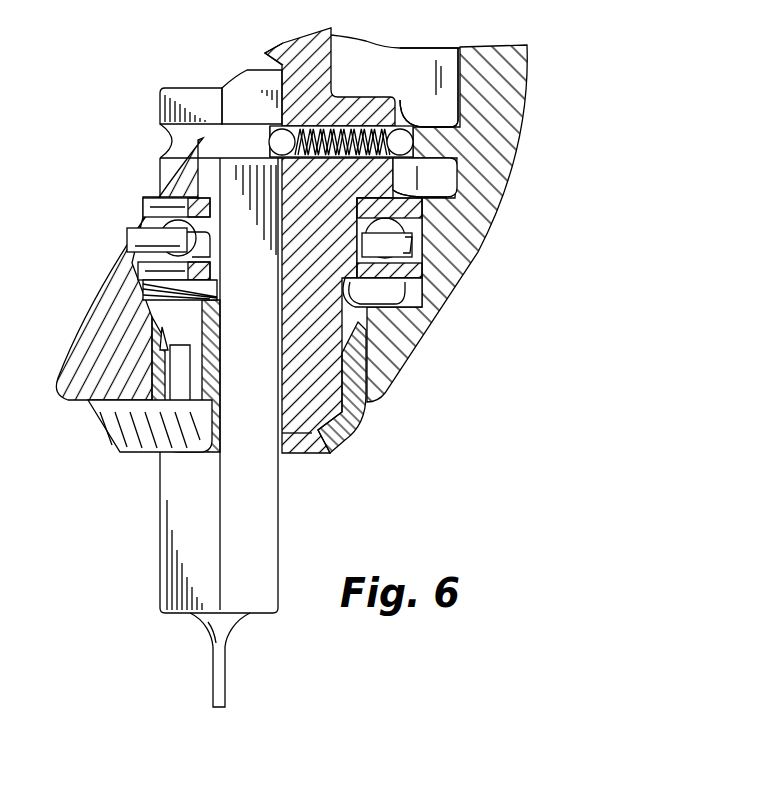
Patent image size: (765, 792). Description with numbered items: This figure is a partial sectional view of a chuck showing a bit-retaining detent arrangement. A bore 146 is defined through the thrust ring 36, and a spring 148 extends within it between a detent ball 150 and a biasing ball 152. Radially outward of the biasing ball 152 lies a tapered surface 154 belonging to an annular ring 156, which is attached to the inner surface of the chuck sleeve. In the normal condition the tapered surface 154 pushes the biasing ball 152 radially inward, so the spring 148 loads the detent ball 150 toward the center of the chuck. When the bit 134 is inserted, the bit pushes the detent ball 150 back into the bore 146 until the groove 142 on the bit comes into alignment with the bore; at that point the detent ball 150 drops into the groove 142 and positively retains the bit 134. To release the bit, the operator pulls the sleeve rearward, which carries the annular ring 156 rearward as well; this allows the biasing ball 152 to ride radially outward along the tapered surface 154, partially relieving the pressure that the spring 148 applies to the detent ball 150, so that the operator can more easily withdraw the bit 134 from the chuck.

The thrust ring 36 is at (393, 100).
The bit 134 is at (278, 525).
The groove 142 is at (168, 141).
The bore 146 is at (357, 126).
The spring 148 is at (440, 193).
The detent ball 150 is at (268, 143).
The biasing ball 152 is at (405, 124).
The tapered surface 154 is at (413, 137).
The annular ring 156 is at (455, 180).